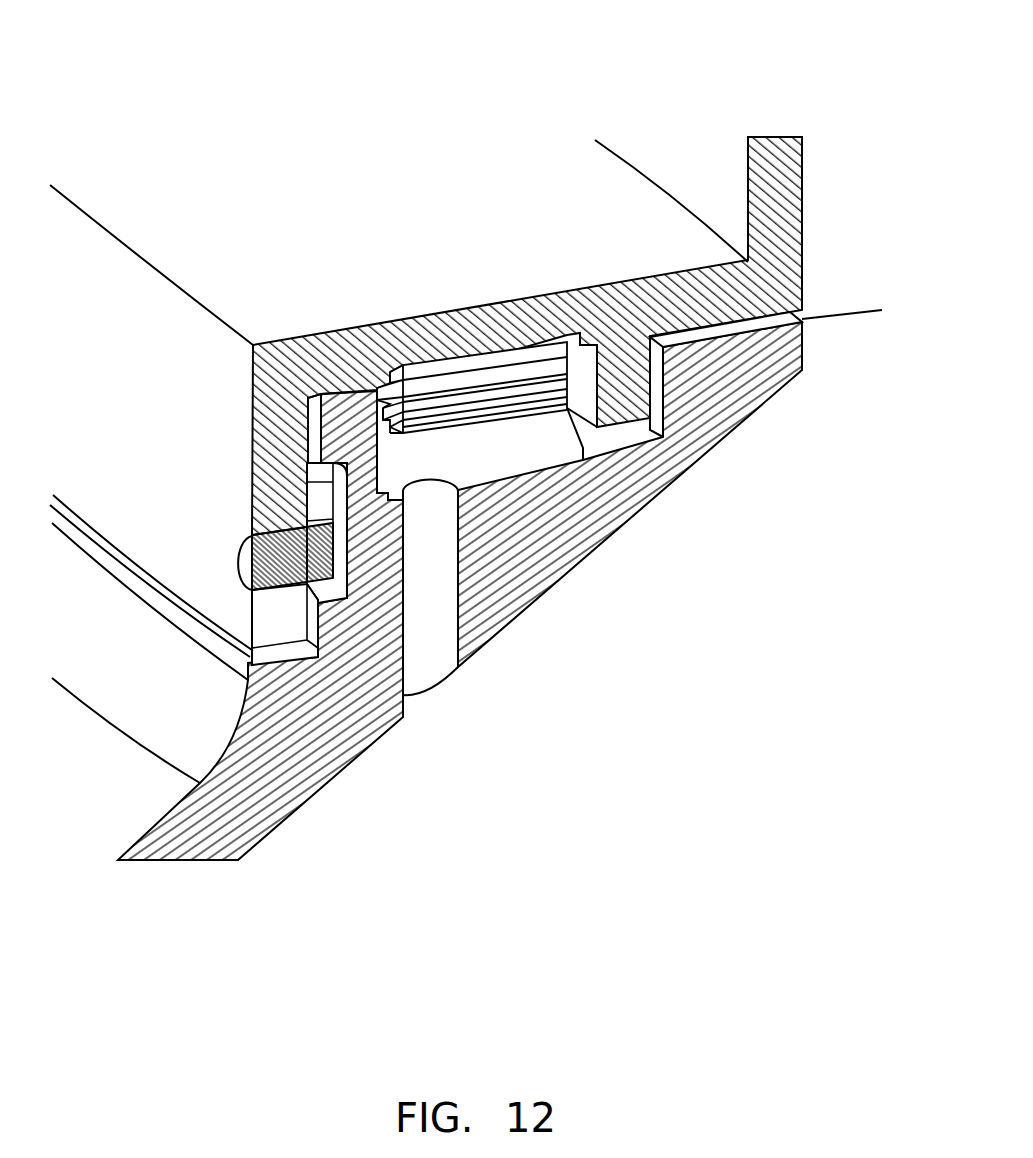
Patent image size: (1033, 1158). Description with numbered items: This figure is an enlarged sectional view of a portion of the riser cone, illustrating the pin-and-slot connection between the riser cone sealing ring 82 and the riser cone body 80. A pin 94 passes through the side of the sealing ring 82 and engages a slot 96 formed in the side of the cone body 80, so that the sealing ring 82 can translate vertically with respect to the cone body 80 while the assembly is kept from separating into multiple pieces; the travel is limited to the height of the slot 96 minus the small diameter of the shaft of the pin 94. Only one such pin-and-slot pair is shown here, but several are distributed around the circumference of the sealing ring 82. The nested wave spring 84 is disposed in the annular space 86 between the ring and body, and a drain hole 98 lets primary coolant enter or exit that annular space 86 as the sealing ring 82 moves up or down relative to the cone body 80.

The riser cone body 80 is at (425, 638).
The riser cone sealing ring 82 is at (462, 235).
The nested wave spring 84 is at (653, 432).
The annular space 86 is at (466, 441).
The pin 94 is at (291, 589).
The slot 96 is at (306, 476).
The drain hole 98 is at (513, 560).